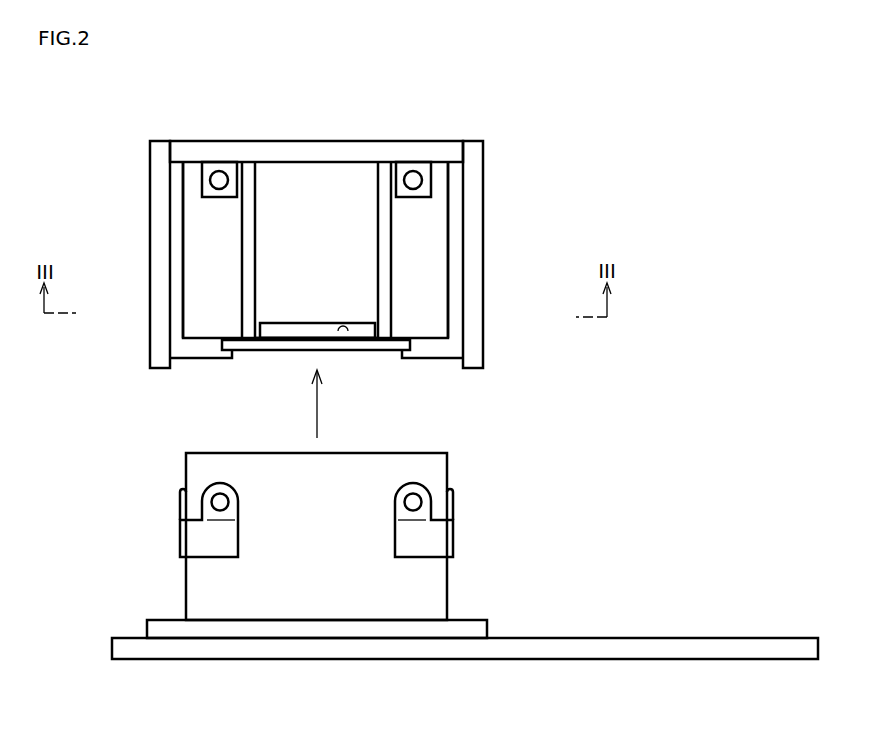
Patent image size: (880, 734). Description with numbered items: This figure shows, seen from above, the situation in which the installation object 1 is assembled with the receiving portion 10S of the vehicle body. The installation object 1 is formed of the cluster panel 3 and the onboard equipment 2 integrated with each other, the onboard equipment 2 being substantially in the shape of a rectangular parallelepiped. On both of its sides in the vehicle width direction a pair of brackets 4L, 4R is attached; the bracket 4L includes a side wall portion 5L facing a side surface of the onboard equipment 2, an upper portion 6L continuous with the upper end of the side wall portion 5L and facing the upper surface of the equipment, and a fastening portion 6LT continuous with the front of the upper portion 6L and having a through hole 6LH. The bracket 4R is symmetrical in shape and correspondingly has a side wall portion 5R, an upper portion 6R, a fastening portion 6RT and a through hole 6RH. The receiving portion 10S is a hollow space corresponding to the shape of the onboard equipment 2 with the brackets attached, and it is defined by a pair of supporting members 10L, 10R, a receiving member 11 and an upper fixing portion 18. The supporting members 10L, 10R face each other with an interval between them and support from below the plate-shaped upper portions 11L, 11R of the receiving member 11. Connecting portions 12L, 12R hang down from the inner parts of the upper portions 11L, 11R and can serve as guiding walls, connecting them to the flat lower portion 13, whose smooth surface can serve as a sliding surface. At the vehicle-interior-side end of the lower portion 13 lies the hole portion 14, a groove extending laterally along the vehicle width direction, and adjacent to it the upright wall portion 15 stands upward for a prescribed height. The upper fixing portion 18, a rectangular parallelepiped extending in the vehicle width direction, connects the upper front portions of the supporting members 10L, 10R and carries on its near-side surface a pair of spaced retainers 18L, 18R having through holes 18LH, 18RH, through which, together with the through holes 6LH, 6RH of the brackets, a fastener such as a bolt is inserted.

The installation object 1 is at (465, 587).
The onboard equipment 2 is at (318, 540).
The cluster panel 3 is at (307, 693).
The bracket 4L is at (161, 515).
The bracket 4R is at (473, 515).
The side wall portion 5L is at (151, 497).
The side wall portion 5R is at (481, 497).
The upper portion 6L is at (169, 515).
The upper portion 6R is at (464, 515).
The fastening portion 6LT is at (210, 514).
The fastening portion 6RT is at (423, 514).
The through hole 6LH is at (215, 500).
The through hole 6RH is at (418, 500).
The supporting member 10L is at (160, 272).
The supporting member 10R is at (472, 272).
The receiving portion 10S is at (358, 283).
The receiving member 11 is at (317, 185).
The upper portion 11L is at (195, 213).
The upper portion 11R is at (437, 213).
The connecting portion 12L is at (247, 256).
The connecting portion 12R is at (384, 255).
The lower portion 13 is at (316, 267).
The hole portion 14 is at (349, 341).
The upright wall portion 15 is at (273, 345).
The upper fixing portion 18 is at (317, 173).
The retainer 18L is at (163, 173).
The retainer 18R is at (469, 173).
The through hole 18LH is at (220, 172).
The through hole 18RH is at (413, 172).